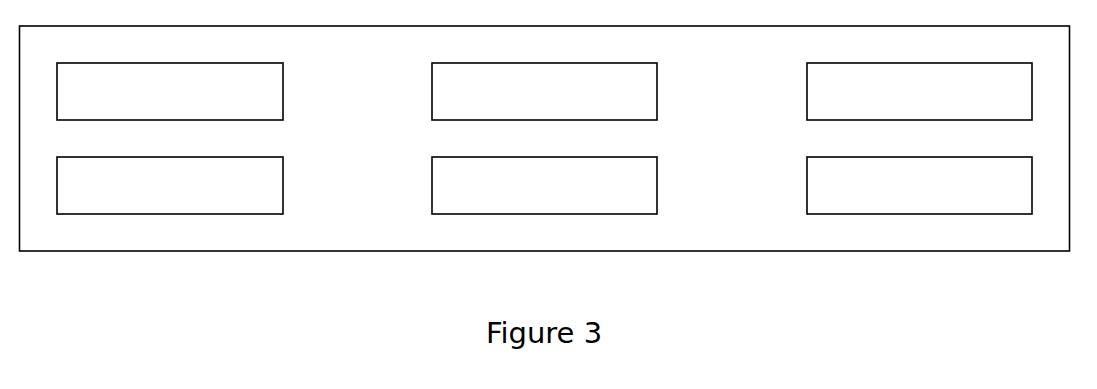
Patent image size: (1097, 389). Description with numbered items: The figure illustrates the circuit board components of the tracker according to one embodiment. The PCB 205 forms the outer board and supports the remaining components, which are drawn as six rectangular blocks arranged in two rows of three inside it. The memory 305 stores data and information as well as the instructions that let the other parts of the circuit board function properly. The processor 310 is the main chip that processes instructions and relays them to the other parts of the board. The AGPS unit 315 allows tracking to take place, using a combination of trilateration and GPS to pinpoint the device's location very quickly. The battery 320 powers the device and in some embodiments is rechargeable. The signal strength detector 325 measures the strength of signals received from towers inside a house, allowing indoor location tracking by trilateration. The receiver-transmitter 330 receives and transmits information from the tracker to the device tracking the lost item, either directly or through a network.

The PCB 205 is at (545, 138).
The memory 305 is at (170, 91).
The processor 310 is at (170, 185).
The AGPS unit 315 is at (544, 91).
The battery 320 is at (544, 185).
The signal strength detector 325 is at (919, 91).
The receiver-transmitter 330 is at (919, 185).